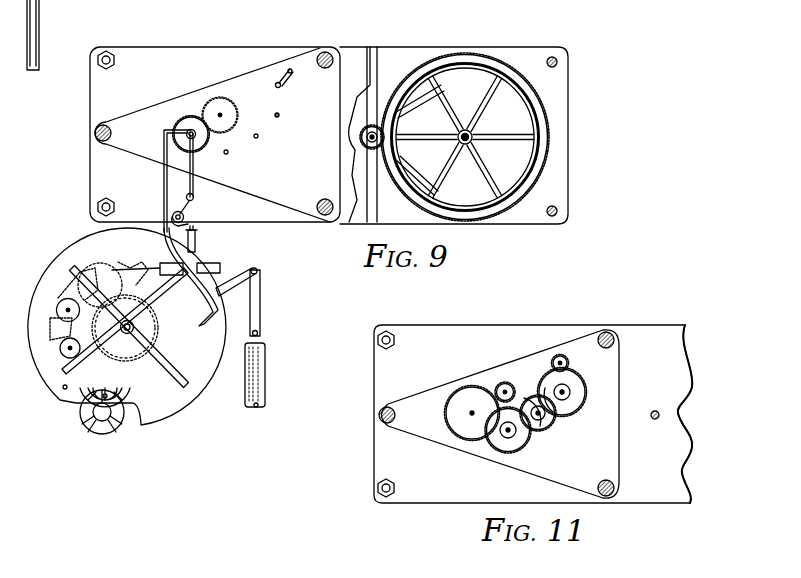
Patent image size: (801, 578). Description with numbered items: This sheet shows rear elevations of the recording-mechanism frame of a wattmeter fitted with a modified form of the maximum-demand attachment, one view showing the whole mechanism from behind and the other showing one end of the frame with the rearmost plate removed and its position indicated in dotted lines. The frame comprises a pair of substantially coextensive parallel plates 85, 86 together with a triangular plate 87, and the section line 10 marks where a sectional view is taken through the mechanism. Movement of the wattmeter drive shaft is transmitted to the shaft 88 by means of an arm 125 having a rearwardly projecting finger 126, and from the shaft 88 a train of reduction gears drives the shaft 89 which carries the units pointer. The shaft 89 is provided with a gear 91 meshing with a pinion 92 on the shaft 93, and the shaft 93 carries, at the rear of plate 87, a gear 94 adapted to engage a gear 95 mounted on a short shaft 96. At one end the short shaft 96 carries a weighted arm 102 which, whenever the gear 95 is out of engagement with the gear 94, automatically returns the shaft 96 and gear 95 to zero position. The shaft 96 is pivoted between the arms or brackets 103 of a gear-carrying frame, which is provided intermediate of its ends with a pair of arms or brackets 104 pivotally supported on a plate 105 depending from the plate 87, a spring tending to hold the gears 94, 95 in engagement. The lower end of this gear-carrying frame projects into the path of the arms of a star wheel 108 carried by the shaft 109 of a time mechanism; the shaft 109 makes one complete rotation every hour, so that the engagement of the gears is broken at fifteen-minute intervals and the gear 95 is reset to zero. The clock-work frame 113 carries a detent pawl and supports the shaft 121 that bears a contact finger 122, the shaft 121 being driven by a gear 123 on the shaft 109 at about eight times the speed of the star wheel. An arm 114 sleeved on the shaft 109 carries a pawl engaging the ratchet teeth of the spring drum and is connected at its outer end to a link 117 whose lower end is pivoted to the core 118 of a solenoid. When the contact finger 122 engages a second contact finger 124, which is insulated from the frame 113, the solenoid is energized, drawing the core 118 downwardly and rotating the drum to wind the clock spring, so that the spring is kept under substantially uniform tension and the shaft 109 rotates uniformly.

In FIG. 9, the section line 10 is at (232, 33).
In FIG. 9, the parallel plate 85 is at (559, 95).
In FIG. 9, the parallel plate 86 is at (344, 39).
In FIG. 9, the triangular plate 87 is at (249, 76).
In FIG. 9, the shaft 88 is at (272, 88).
In FIG. 11, the shaft 88 is at (569, 363).
In FIG. 11, the shaft 89 is at (470, 413).
In FIG. 11, the gear 91 is at (478, 396).
In FIG. 11, the pinion 92 is at (531, 399).
In FIG. 9, the shaft 93 is at (222, 114).
In FIG. 11, the shaft 93 is at (506, 390).
In FIG. 9, the gear 94 is at (206, 100).
In FIG. 9, the gear 95 is at (184, 118).
In FIG. 9, the short shaft 96 is at (178, 128).
In FIG. 9, the weighted arm 102 is at (193, 170).
In FIG. 9, the arms or brackets 103 is at (182, 135).
In FIG. 9, the arms or brackets 104 is at (171, 216).
In FIG. 9, the plate 105 is at (191, 253).
In FIG. 9, the star wheel 108 is at (143, 291).
In FIG. 9, the shaft 109 is at (128, 334).
In FIG. 9, the frame 113 is at (127, 330).
In FIG. 9, the arm 114 is at (241, 279).
In FIG. 9, the link 117 is at (261, 300).
In FIG. 9, the core 118 is at (265, 377).
In FIG. 9, the shaft 121 is at (89, 313).
In FIG. 9, the contact finger 122 is at (120, 270).
In FIG. 9, the gear 123 is at (125, 325).
In FIG. 9, the contact finger 124 is at (140, 268).
In FIG. 9, the arm 125 is at (292, 79).
In FIG. 9, the finger 126 is at (290, 70).